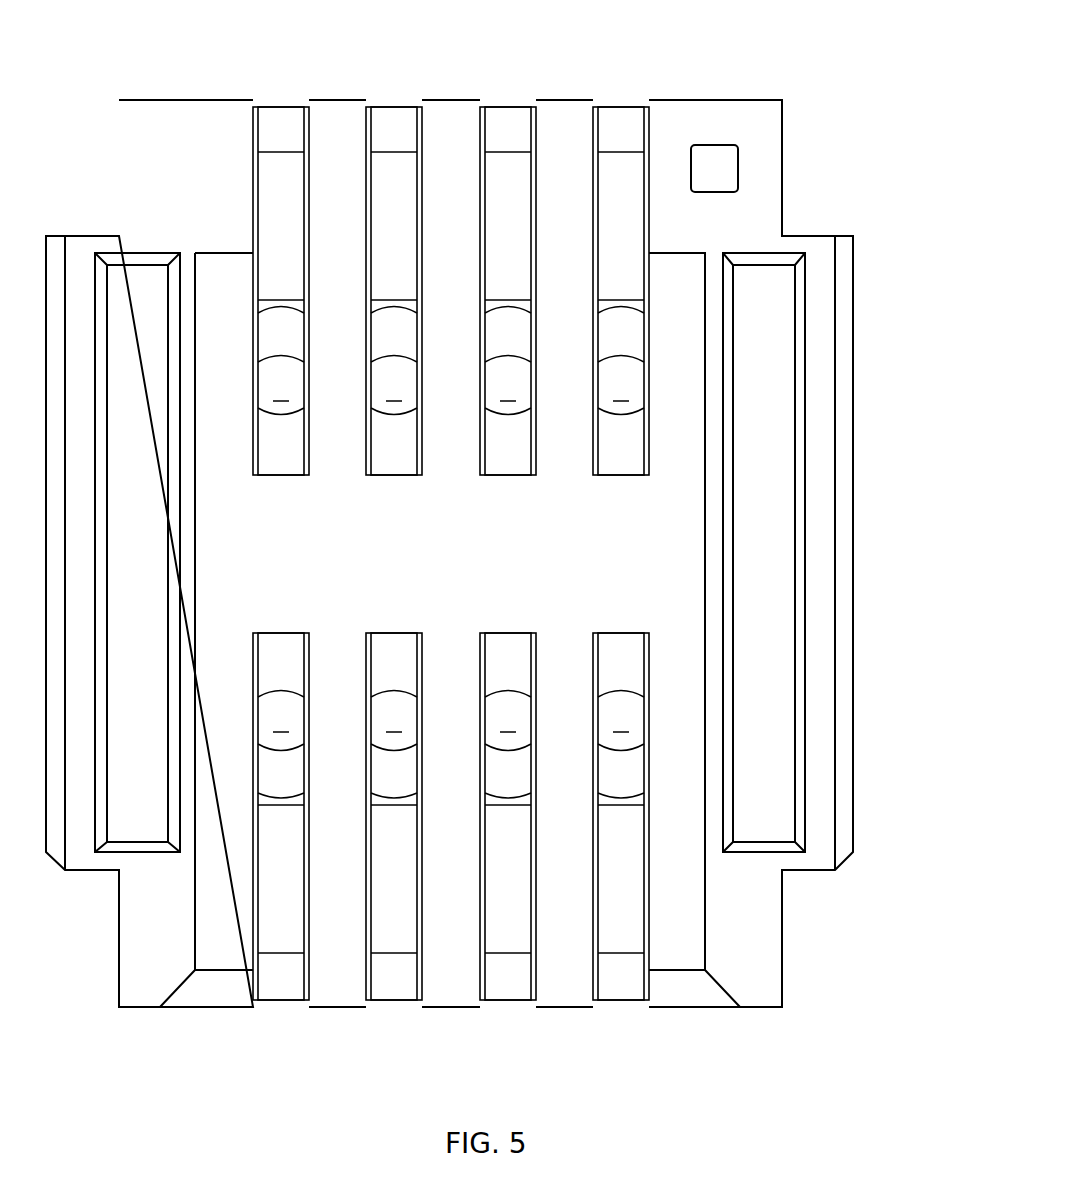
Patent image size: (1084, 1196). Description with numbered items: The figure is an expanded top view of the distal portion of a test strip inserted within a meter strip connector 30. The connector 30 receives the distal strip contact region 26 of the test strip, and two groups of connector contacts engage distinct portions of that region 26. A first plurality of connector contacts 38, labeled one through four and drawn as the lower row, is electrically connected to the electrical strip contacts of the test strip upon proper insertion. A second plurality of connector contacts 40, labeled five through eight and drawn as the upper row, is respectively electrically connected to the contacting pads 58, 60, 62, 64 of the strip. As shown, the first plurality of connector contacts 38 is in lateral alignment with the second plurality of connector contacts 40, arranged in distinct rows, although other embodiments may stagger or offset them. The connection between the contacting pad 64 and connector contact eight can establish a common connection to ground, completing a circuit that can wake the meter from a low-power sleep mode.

The distal strip contact region 26 is at (603, 557).
The meter strip connector 30 is at (820, 250).
The first plurality of connector contacts 38 is at (675, 762).
The second plurality of connector contacts 40 is at (675, 323).
The contacting pad 58 is at (280, 290).
The contacting pad 60 is at (394, 290).
The contacting pad 62 is at (508, 290).
The contacting pad 64 is at (621, 290).